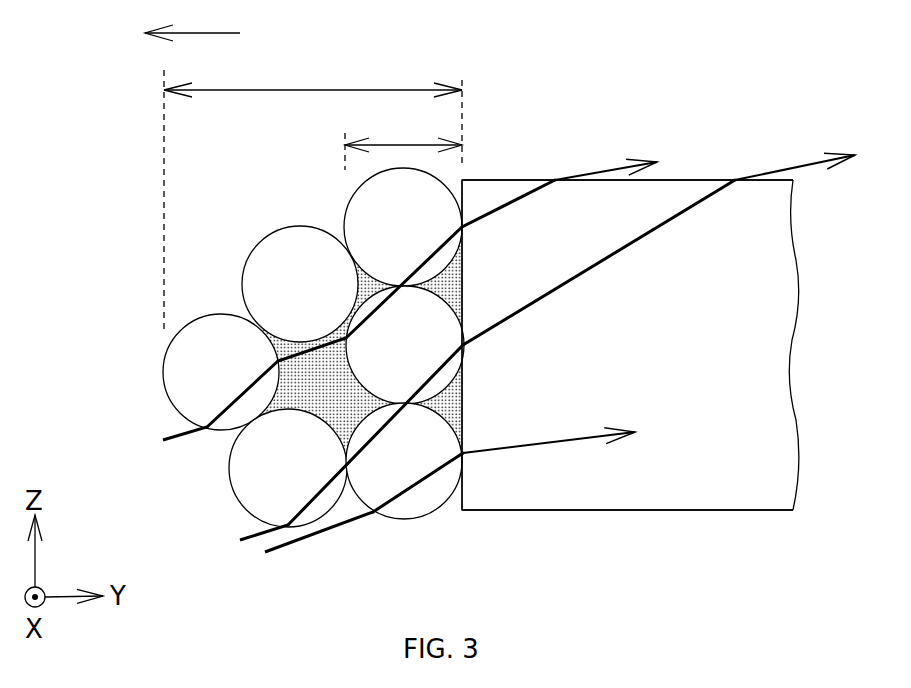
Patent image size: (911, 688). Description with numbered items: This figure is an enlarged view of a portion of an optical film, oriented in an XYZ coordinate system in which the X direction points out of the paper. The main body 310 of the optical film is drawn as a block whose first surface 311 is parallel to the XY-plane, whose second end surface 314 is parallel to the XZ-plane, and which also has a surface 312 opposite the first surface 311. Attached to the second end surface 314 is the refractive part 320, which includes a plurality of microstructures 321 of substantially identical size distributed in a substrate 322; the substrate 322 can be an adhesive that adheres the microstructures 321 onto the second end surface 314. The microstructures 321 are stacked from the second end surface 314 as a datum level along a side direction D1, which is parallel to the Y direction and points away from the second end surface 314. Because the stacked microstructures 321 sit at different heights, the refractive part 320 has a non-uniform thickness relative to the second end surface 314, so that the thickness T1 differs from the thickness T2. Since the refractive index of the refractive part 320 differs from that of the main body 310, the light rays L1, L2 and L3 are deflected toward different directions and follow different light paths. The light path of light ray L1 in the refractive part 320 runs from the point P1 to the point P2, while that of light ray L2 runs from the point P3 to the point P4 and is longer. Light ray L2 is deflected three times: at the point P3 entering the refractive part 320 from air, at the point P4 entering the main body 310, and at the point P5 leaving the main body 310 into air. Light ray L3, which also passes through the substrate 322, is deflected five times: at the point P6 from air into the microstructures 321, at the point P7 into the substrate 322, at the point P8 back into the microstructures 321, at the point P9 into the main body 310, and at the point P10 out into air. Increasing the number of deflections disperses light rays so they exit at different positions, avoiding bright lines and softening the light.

The main body 310 is at (747, 353).
The first surface 311 is at (685, 180).
The second surface of light guide element 312 is at (688, 510).
The second end surface 314 is at (463, 489).
The refractive part 320 is at (263, 353).
The microstructures 321 is at (257, 492).
The substrate 322 is at (293, 397).
The point P1 is at (373, 514).
The point P2 is at (464, 450).
The point P3 is at (288, 524).
The point P4 is at (464, 346).
The point P5 is at (735, 182).
The point P6 is at (208, 427).
The point P7 is at (279, 361).
The point P8 is at (347, 339).
The point P9 is at (462, 227).
The point P10 is at (555, 180).
The light ray L1 is at (467, 484).
The light ray L2 is at (550, 330).
The light ray L3 is at (410, 284).
The thickness T1 is at (403, 143).
The thickness T2 is at (313, 195).
The side direction D1 is at (192, 20).